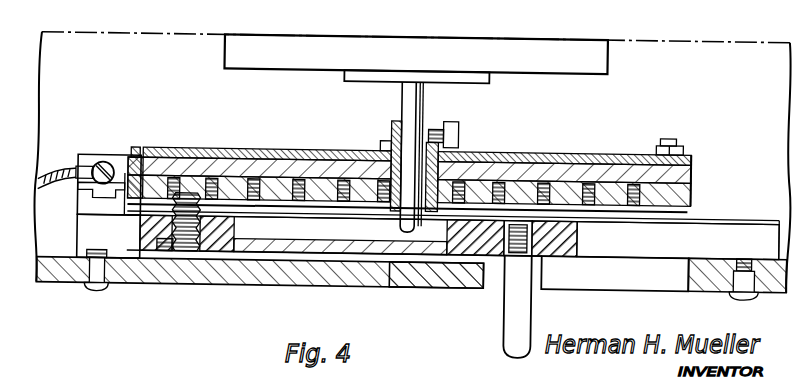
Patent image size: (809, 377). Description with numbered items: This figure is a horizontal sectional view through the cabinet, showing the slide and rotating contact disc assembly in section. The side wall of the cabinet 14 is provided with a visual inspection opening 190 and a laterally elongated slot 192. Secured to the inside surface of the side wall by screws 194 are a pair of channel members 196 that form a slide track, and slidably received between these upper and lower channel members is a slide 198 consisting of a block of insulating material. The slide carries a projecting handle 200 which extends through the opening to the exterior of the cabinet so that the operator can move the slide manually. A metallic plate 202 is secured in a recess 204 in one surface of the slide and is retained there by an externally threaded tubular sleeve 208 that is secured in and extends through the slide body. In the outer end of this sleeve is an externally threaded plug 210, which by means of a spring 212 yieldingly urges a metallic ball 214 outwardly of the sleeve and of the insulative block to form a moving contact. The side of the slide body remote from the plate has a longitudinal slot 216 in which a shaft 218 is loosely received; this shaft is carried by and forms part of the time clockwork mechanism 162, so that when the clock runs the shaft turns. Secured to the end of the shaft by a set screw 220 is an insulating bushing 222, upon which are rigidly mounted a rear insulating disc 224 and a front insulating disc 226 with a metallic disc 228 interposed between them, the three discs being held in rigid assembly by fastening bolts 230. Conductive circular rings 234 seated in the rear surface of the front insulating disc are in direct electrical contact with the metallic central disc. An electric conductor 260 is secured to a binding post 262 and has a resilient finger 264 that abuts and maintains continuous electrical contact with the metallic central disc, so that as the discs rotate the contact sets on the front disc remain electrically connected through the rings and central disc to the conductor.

The cabinet side wall 14 is at (320, 272).
The time clockwork mechanism 162 is at (562, 52).
The visual inspection opening 190 is at (392, 268).
The laterally elongated slot 192 is at (640, 275).
The screws 194 is at (101, 270).
The channel members 196 is at (102, 227).
The slide 198 is at (566, 242).
The projecting handle 200 is at (526, 300).
The metallic plate 202 is at (225, 250).
The recess 204 is at (256, 233).
The externally threaded tubular sleeve 208 is at (166, 250).
The externally threaded plug 210 is at (190, 252).
The spring 212 is at (214, 178).
The metallic ball 214 is at (176, 178).
The longitudinal slot 216 is at (462, 205).
The shaft 218 is at (424, 112).
The set screw 220 is at (461, 130).
The insulating bushing 222 is at (393, 122).
The rear insulating disc 224 is at (570, 160).
The front insulating disc 226 is at (147, 172).
The metallic disc 228 is at (620, 170).
The fastening bolts 230 is at (672, 131).
The circular rings 234 is at (694, 186).
The electric conductor 260 is at (57, 168).
The binding post 262 is at (80, 188).
The resilient finger 264 is at (136, 158).